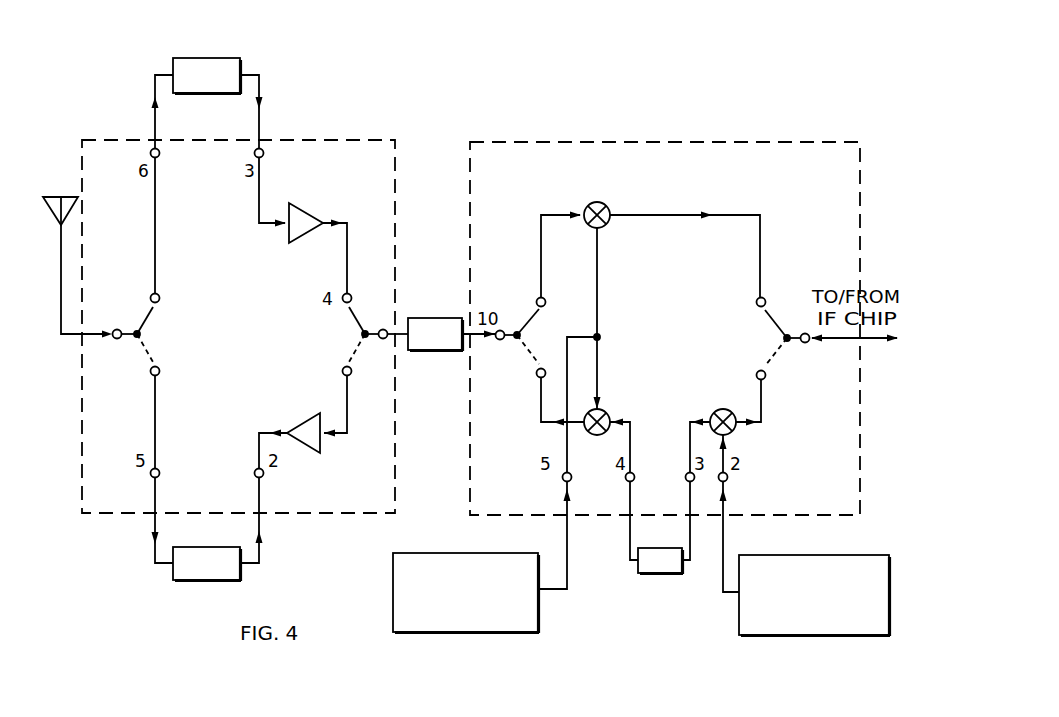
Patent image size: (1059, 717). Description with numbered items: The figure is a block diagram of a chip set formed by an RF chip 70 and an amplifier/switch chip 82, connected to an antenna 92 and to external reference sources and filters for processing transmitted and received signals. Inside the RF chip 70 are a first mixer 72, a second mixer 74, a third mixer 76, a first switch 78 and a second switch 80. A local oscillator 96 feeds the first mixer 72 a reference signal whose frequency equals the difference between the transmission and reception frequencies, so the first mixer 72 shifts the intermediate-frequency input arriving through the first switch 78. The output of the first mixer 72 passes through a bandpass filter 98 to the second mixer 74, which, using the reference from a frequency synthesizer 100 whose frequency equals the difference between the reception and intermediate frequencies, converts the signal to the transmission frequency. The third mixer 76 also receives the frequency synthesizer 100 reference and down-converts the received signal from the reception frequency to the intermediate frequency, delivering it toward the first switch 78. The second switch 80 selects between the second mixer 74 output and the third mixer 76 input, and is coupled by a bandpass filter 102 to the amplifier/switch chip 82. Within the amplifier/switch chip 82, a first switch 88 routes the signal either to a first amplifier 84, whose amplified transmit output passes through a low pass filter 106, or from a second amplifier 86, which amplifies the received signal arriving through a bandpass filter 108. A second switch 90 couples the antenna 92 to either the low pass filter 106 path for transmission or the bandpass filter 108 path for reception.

The RF chip 70 is at (695, 142).
The first mixer 72 is at (713, 410).
The second mixer 74 is at (609, 410).
The third mixer 76 is at (603, 203).
The first switch 78 is at (769, 326).
The second switch 80 is at (531, 319).
The amplifier/switch chip 82 is at (319, 140).
The first amplifier 84 is at (305, 413).
The second amplifier 86 is at (300, 243).
The first switch 88 is at (352, 324).
The second switch 90 is at (153, 327).
The antenna 92 is at (62, 197).
The local oscillator 96 is at (839, 555).
The bandpass filter 98 is at (660, 573).
The frequency synthesizer 100 is at (488, 553).
The bandpass filter 102 is at (418, 318).
The low pass filter 106 is at (191, 547).
The bandpass filter 108 is at (222, 58).